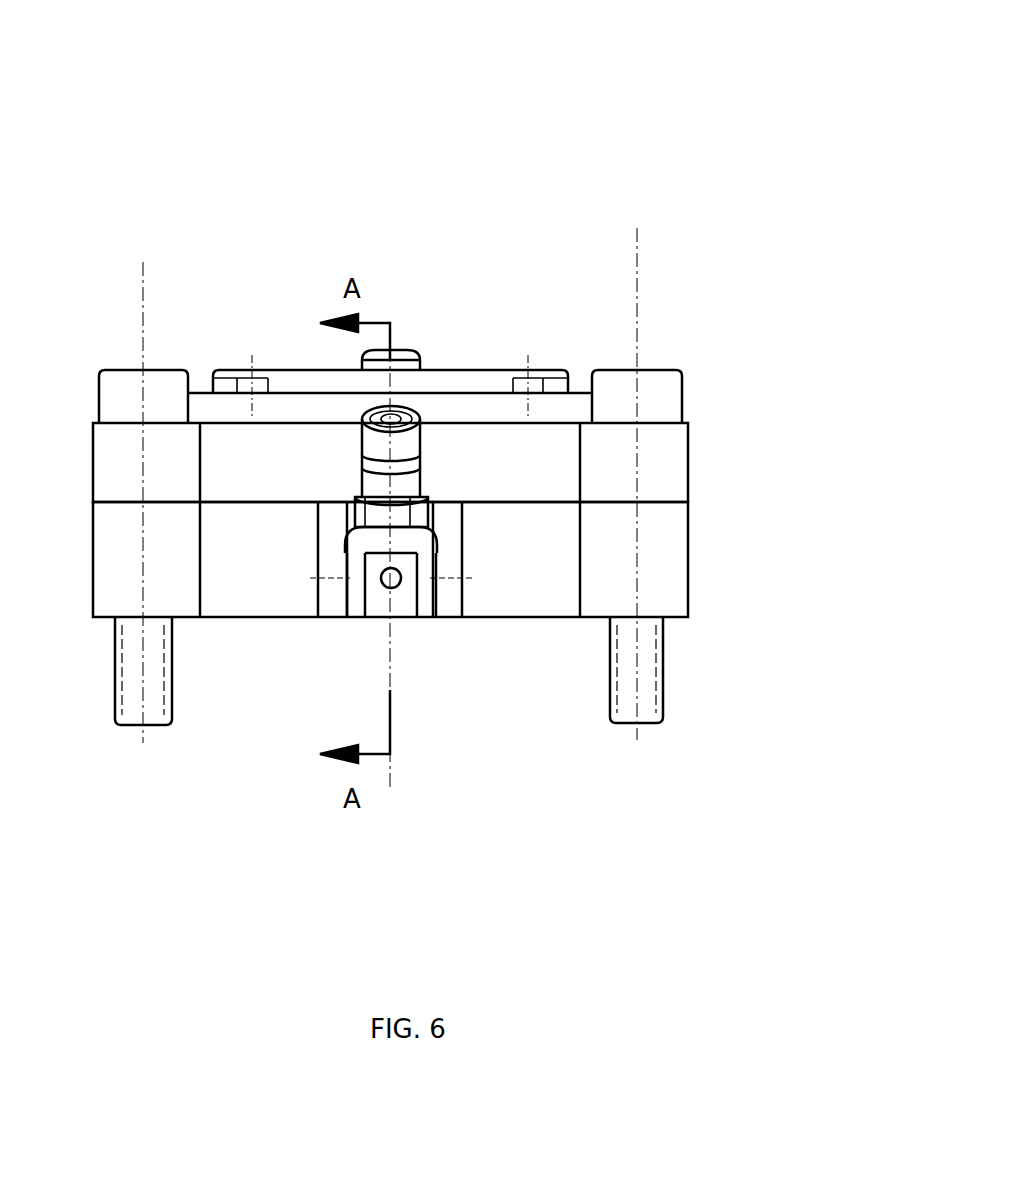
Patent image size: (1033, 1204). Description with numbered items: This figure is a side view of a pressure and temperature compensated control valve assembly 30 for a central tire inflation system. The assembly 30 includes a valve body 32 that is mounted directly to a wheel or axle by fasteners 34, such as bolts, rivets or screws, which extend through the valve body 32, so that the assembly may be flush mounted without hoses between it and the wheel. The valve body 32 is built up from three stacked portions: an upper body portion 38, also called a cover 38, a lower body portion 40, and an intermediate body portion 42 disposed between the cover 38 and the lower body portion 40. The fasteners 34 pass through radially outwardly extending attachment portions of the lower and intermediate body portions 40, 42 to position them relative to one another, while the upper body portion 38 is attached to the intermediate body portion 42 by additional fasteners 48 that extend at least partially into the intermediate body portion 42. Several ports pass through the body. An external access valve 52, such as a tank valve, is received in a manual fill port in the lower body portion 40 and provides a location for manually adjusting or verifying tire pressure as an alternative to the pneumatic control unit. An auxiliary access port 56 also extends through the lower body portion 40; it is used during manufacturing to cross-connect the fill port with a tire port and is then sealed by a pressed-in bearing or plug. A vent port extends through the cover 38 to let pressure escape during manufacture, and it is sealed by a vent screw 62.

The valve assembly 30 is at (620, 148).
The valve body 32 is at (122, 595).
The fasteners 34 is at (680, 700).
The upper body portion 38 is at (484, 408).
The lower body portion 40 is at (517, 602).
The intermediate body portion 42 is at (662, 468).
The additional fasteners 48 is at (235, 380).
The external access valve 52 is at (360, 492).
The auxiliary access port 56 is at (405, 605).
The vent screw 62 is at (406, 352).